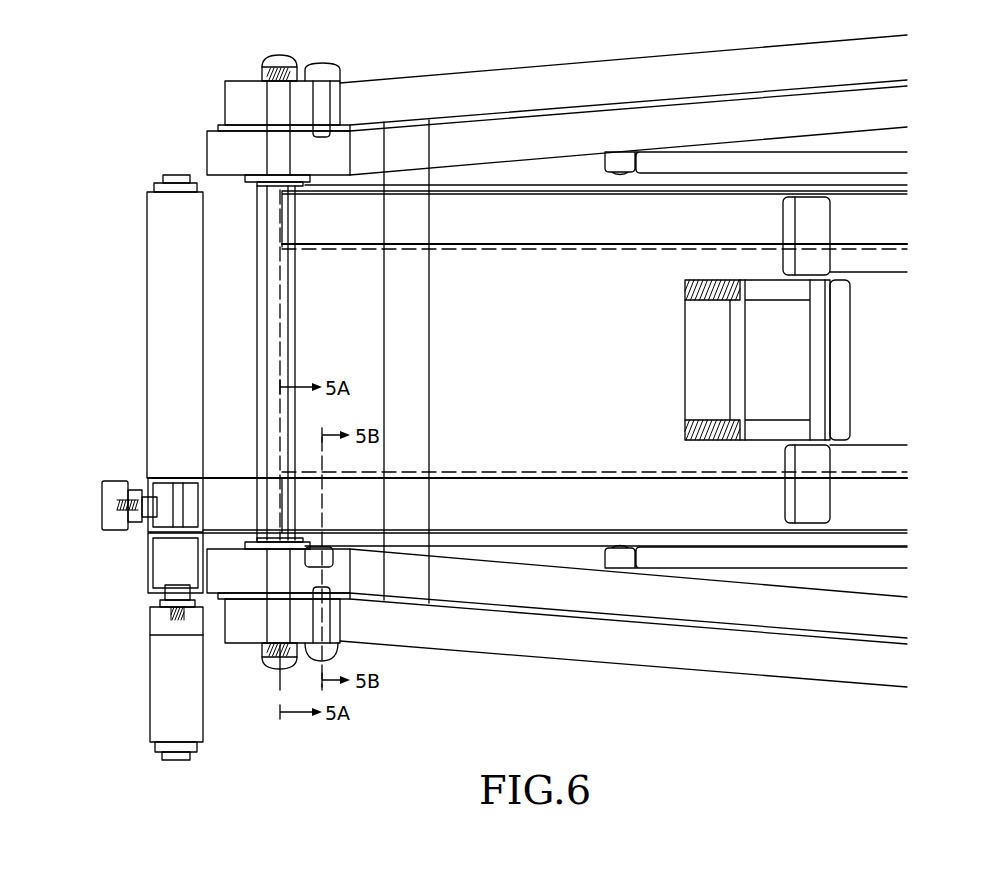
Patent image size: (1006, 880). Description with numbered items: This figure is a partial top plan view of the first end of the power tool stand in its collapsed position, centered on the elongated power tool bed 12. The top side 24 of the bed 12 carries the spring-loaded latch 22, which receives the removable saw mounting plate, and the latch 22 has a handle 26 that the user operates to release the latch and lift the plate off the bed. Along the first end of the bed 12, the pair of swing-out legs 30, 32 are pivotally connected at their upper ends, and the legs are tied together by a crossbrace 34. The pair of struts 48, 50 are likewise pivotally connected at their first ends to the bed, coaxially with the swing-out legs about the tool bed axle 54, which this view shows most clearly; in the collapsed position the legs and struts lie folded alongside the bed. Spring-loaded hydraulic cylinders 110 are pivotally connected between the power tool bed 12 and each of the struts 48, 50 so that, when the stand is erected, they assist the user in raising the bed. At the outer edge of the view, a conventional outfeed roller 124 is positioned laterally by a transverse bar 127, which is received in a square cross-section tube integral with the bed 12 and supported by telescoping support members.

The power tool bed 12 is at (560, 185).
The spring-loaded latch 22 is at (843, 347).
The top side 24 is at (581, 367).
The handle 26 is at (745, 378).
The swing-out leg 30 is at (497, 655).
The swing-out leg 32 is at (556, 62).
The crossbrace 34 is at (430, 296).
The strut 48 is at (527, 605).
The strut 50 is at (487, 117).
The tool bed axle 54 is at (293, 320).
The spring-loaded hydraulic cylinder 110 is at (887, 152).
The outfeed roller 124 is at (147, 276).
The transverse bar 127 is at (238, 478).